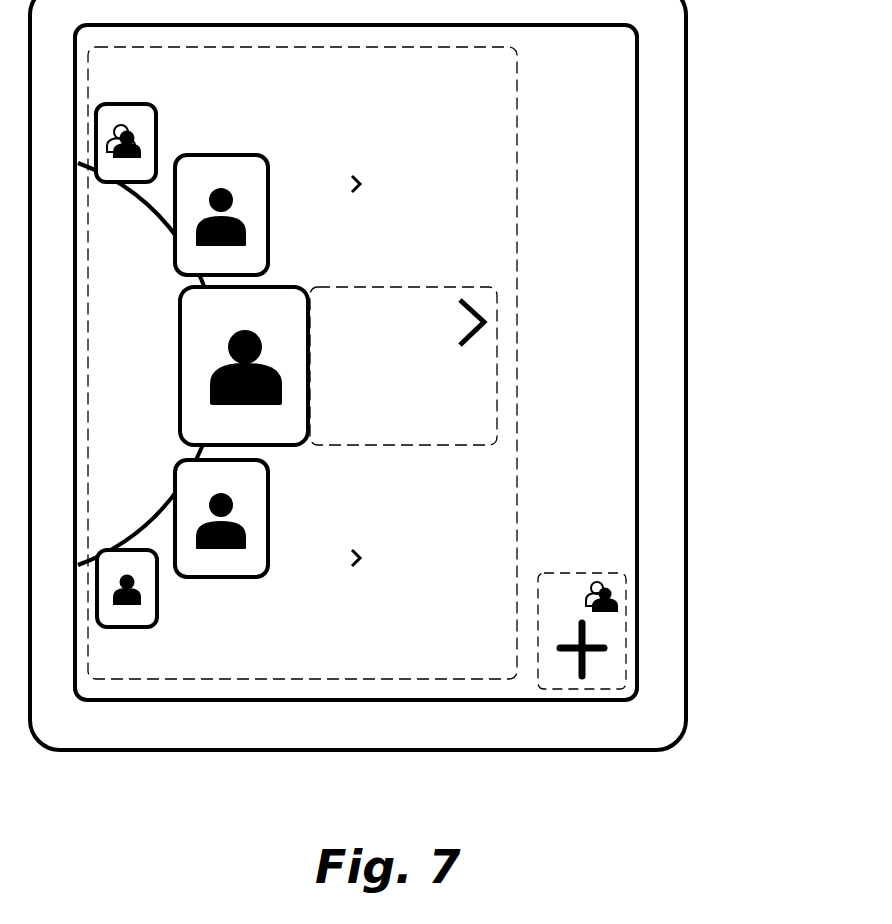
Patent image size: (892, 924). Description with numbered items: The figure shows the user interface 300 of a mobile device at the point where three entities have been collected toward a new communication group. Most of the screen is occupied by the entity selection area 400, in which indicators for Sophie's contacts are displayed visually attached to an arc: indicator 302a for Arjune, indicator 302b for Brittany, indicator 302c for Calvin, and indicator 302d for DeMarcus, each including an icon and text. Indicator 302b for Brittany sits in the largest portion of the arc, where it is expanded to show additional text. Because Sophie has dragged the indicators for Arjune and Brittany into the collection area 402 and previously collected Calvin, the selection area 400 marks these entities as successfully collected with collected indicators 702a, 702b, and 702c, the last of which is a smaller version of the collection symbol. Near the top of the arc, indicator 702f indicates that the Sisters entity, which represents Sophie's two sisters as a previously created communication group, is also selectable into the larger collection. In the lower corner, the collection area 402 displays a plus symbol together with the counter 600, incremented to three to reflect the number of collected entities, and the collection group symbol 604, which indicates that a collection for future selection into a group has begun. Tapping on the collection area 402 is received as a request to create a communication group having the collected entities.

The user interface 300 is at (606, 72).
The entity selection area 400 is at (518, 166).
The indicator 302a is at (302, 147).
The indicator 302b is at (384, 264).
The indicator 302c is at (302, 591).
The indicator 302d is at (198, 634).
The collected indicator 702a is at (378, 178).
The collected indicator 702b is at (483, 299).
The collected indicator 702c is at (368, 540).
The indicator 702f is at (191, 97).
The counter 600 is at (541, 575).
The collection group symbol 604 is at (620, 576).
The collection area 402 is at (625, 690).